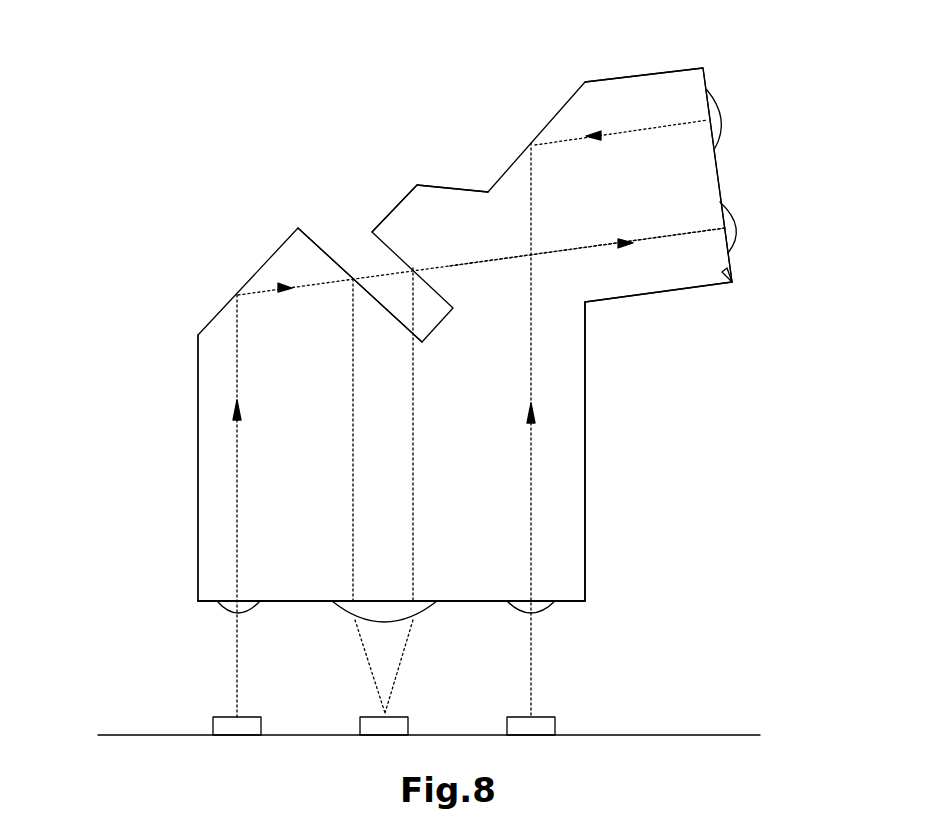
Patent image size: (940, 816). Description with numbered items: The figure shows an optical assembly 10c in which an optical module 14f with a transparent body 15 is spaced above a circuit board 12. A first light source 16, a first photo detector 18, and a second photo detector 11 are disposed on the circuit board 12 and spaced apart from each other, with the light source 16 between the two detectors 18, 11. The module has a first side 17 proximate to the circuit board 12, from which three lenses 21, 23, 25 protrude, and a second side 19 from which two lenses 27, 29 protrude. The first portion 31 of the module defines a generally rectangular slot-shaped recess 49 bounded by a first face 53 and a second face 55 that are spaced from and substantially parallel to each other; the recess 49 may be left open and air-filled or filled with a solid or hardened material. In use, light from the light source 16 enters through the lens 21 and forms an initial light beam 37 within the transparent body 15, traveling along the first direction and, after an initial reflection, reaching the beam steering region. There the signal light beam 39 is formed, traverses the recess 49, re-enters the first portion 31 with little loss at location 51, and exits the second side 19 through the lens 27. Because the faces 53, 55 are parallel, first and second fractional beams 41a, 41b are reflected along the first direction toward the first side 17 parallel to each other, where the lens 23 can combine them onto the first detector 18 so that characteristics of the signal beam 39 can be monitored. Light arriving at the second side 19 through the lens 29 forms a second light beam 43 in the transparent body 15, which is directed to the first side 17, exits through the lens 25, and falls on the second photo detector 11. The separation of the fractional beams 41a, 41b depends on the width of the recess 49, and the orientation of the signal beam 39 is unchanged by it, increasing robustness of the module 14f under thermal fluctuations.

The optical assembly 10c is at (808, 175).
The transparent body 15 is at (778, 125).
The optical module 14f is at (190, 448).
The first face 53 is at (316, 245).
The recess 49 is at (368, 257).
The second face 55 is at (382, 242).
The location 51 is at (413, 270).
The signal light beam 39 is at (663, 236).
The second light beam 43 is at (628, 132).
The initial light beam 37 is at (237, 497).
The first fractional beam 41a is at (353, 477).
The second fractional beam 41b is at (413, 498).
The lens 29 is at (720, 105).
The lens 27 is at (730, 240).
The second side 19 is at (727, 278).
The first portion 31 is at (560, 573).
The first side 17 is at (472, 603).
The lens 21 is at (228, 608).
The lens 23 is at (383, 612).
The lens 25 is at (540, 608).
The first light source 16 is at (227, 725).
The first photo detector 18 is at (398, 727).
The second photo detector 11 is at (543, 725).
The circuit board 12 is at (685, 735).